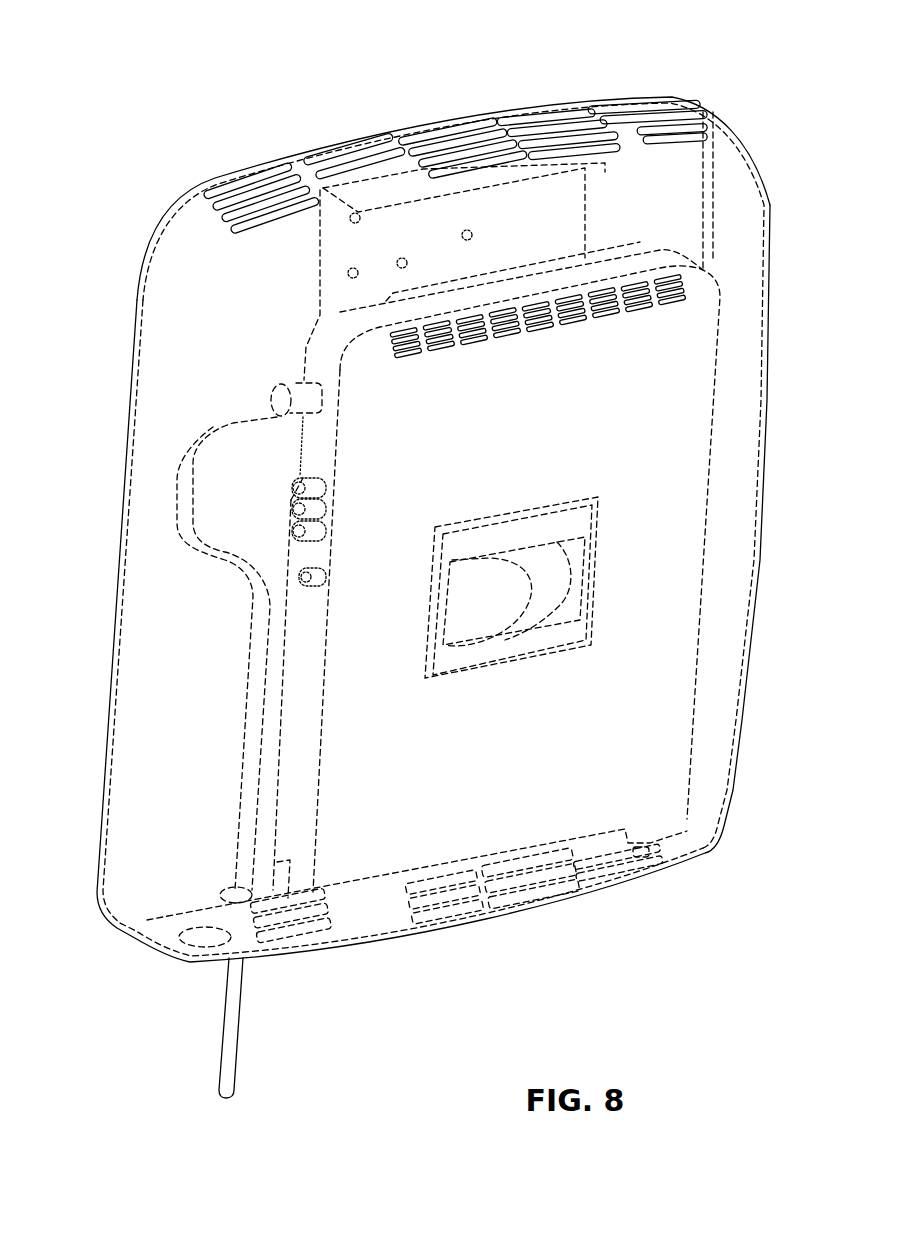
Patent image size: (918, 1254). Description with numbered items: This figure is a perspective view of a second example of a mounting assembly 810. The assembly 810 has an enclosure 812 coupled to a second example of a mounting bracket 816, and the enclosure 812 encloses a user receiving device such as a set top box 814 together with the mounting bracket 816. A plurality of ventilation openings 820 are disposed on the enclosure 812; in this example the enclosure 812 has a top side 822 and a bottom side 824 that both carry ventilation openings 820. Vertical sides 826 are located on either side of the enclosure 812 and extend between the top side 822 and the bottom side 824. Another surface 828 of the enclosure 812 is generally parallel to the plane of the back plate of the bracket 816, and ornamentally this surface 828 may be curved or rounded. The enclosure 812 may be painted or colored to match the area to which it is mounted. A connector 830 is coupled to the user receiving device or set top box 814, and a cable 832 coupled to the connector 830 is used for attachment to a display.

The mounting assembly 810 is at (748, 107).
The enclosure 812 is at (150, 237).
The set top box 814 is at (693, 706).
The mounting bracket 816 is at (580, 225).
The ventilation openings 820 is at (630, 100).
The top side 822 is at (195, 210).
The bottom side 824 is at (500, 922).
The vertical sides 826 is at (130, 767).
The surface 828 is at (740, 525).
The connector 830 is at (294, 384).
The cable 832 is at (215, 433).